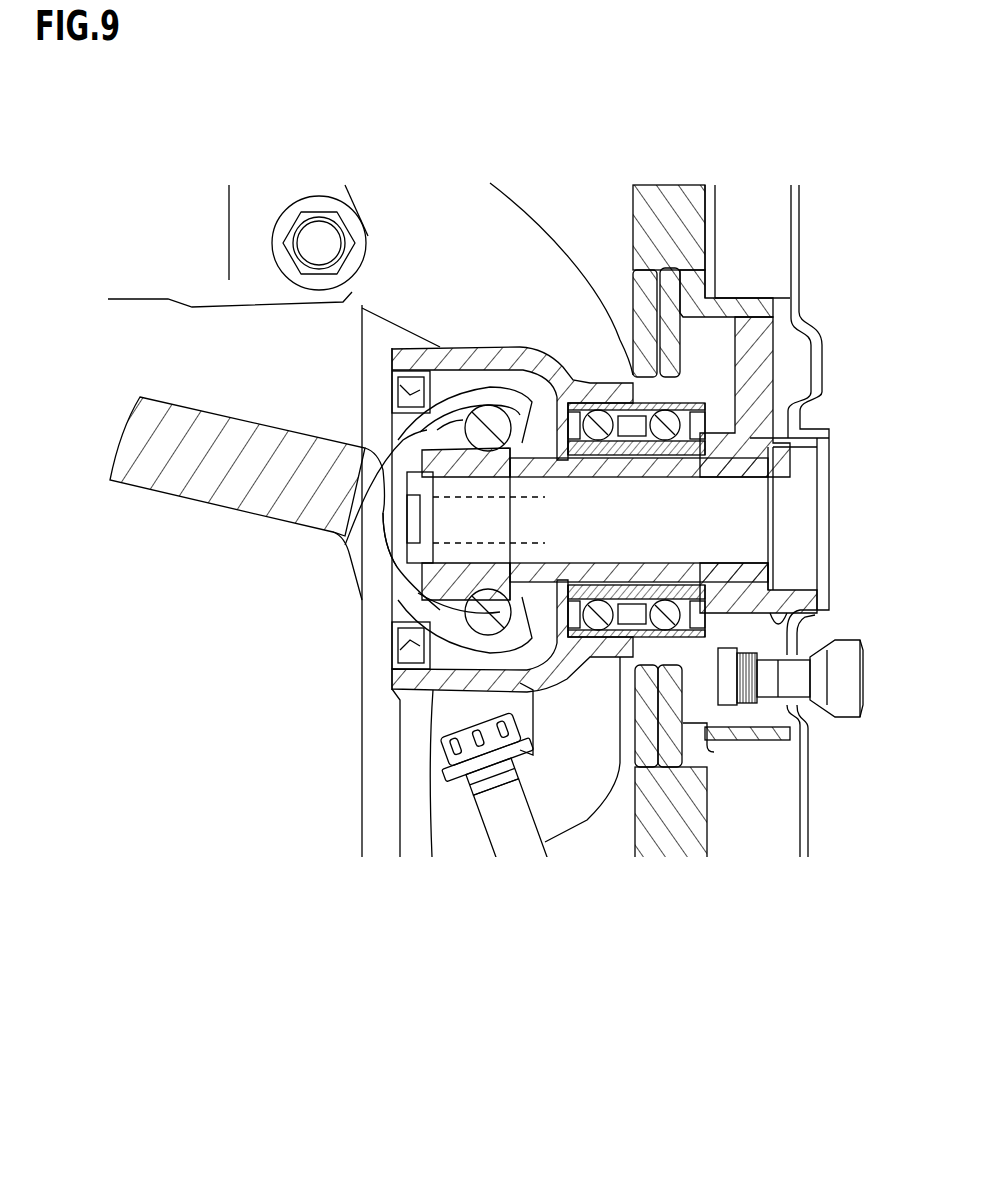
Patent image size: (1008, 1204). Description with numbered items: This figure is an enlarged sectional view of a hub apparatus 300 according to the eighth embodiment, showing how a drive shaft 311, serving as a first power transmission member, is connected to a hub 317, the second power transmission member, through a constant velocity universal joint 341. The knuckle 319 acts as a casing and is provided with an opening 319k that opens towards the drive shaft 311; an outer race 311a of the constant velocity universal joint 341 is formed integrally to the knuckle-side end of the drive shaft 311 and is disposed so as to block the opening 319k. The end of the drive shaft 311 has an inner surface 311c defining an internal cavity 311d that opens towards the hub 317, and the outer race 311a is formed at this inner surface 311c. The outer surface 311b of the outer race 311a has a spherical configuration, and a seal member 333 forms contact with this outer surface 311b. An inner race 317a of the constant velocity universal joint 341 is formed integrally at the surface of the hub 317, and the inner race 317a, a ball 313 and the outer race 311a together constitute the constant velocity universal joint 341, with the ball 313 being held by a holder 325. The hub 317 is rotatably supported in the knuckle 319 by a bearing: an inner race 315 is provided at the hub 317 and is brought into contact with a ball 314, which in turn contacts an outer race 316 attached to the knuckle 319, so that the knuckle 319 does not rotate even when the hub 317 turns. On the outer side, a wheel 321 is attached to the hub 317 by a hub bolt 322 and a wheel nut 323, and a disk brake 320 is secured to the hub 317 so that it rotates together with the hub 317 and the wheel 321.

The hub apparatus 300 is at (847, 962).
The drive shaft 311 is at (135, 442).
The outer race 311a is at (473, 412).
The outer surface 311b is at (402, 397).
The inner surface 311c is at (390, 548).
The internal cavity 311d is at (397, 587).
The ball 313 is at (492, 418).
The ball 314 is at (677, 424).
The inner race 315 is at (695, 445).
The outer race 316 is at (698, 388).
The hub 317 is at (747, 585).
The inner race 317a is at (435, 433).
The knuckle 319 is at (555, 372).
The opening 319k is at (435, 690).
The disk brake 320 is at (675, 203).
The wheel 321 is at (795, 197).
The hub bolt 322 is at (788, 680).
The wheel nut 323 is at (845, 682).
The holder 325 is at (398, 640).
The seal member 333 is at (396, 690).
The constant velocity universal joint 341 is at (350, 598).